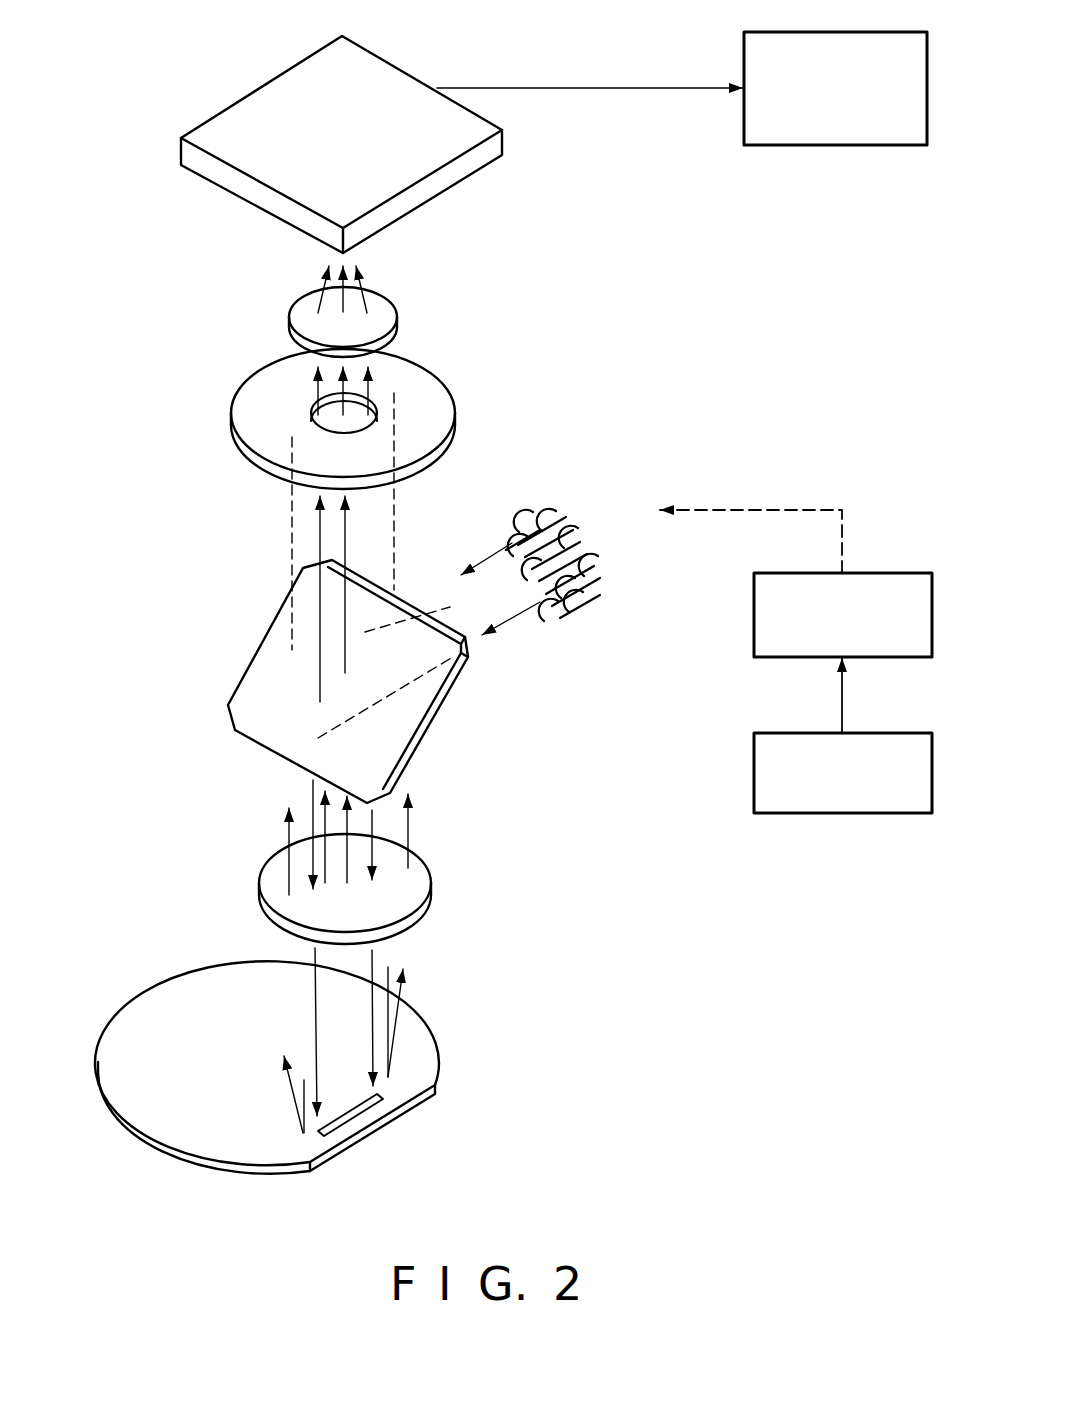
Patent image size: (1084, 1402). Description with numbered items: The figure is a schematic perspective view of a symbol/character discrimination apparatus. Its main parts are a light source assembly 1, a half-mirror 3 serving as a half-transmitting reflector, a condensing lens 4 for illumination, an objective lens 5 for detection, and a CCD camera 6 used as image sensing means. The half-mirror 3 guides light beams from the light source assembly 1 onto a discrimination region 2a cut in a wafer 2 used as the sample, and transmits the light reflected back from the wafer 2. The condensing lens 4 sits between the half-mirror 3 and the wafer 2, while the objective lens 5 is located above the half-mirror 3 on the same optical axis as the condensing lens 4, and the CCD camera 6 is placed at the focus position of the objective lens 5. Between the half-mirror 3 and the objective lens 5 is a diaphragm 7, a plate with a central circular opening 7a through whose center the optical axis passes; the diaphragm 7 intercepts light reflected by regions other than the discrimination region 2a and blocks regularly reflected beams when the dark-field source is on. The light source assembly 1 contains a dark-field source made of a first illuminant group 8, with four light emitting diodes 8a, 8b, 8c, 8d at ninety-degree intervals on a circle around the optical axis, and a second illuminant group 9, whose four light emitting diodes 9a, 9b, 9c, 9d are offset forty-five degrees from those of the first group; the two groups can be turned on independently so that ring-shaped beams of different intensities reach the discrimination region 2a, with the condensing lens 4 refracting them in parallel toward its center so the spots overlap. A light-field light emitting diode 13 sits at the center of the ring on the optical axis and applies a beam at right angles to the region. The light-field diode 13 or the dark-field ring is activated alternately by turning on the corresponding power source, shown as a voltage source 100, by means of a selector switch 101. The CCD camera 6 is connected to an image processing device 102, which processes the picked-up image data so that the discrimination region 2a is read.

The light source assembly 1 is at (619, 562).
The wafer 2 is at (228, 1130).
The discrimination region 2a is at (350, 1115).
The half-mirror 3 is at (423, 743).
The condensing lens 4 is at (420, 880).
The objective lens 5 is at (383, 308).
The CCD camera 6 is at (417, 198).
The diaphragm 7 is at (433, 380).
The circular opening 7a is at (358, 420).
The first illuminant group 8 is at (542, 489).
The light emitting diode 8a is at (548, 515).
The light emitting diode 8b is at (600, 565).
The light emitting diode 8c is at (555, 612).
The light emitting diode 8d is at (512, 538).
The second illuminant group 9 is at (576, 621).
The light emitting diode 9a is at (583, 535).
The light emitting diode 9b is at (585, 600).
The light emitting diode 9c is at (525, 582).
The light emitting diode 9d is at (521, 513).
The light emitting diode 13 is at (585, 575).
The voltage source 100 is at (895, 573).
The switch 101 is at (895, 733).
The image processing device 102 is at (773, 145).